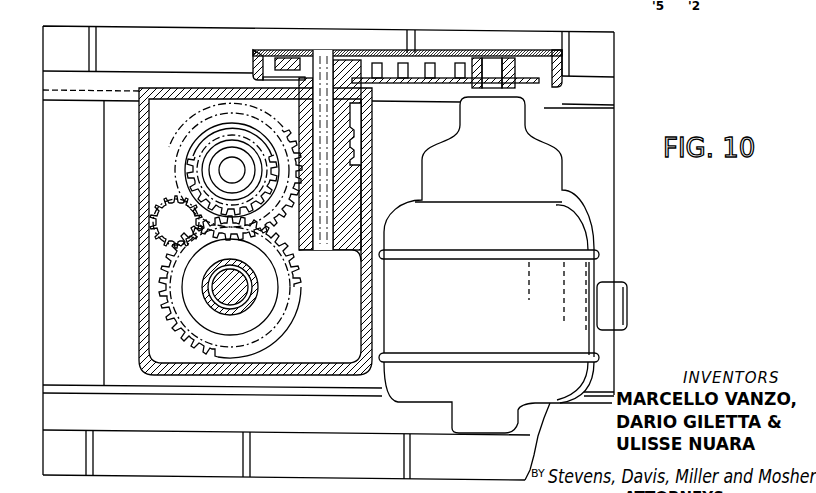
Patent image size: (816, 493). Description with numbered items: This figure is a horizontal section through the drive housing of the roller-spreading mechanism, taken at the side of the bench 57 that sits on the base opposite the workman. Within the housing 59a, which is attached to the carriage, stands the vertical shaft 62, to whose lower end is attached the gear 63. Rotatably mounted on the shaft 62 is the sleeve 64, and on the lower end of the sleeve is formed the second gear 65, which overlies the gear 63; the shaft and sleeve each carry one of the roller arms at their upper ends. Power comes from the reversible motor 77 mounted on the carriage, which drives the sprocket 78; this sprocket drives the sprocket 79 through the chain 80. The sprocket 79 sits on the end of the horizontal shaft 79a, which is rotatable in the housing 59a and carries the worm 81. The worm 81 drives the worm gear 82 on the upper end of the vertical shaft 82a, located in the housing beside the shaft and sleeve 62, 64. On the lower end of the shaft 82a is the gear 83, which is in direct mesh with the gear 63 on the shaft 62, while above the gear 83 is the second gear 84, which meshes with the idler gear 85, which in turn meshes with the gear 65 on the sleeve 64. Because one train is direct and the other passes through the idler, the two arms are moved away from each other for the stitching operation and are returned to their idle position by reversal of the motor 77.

The bench 57 is at (608, 130).
The housing 59a is at (372, 160).
The vertical shaft 62 is at (245, 287).
The gear 63 is at (161, 283).
The sleeve 64 is at (273, 310).
The second gear 65 is at (167, 265).
The reversible motor 77 is at (577, 293).
The sprocket 78 is at (515, 66).
The sprocket 79 is at (350, 68).
The horizontal shaft 79a is at (319, 66).
The chain 80 is at (437, 63).
The worm 81 is at (357, 148).
The worm gear 82 is at (233, 165).
The vertical shaft 82a is at (253, 112).
The gear 83 is at (217, 123).
The second gear 84 is at (197, 143).
The idler gear 85 is at (149, 228).